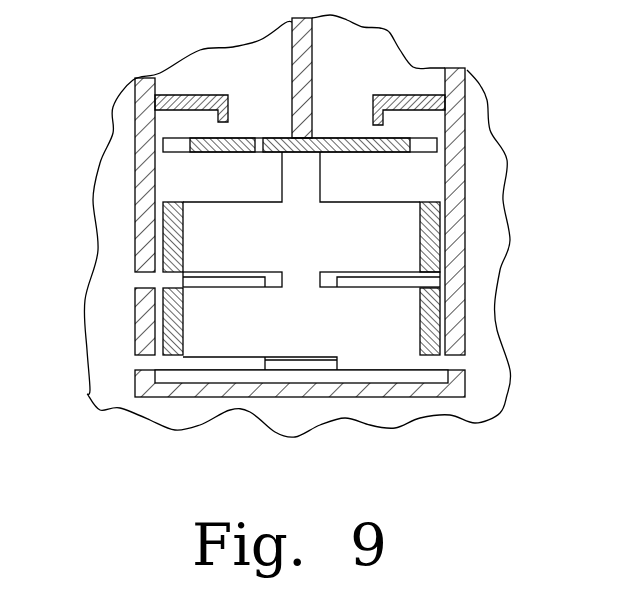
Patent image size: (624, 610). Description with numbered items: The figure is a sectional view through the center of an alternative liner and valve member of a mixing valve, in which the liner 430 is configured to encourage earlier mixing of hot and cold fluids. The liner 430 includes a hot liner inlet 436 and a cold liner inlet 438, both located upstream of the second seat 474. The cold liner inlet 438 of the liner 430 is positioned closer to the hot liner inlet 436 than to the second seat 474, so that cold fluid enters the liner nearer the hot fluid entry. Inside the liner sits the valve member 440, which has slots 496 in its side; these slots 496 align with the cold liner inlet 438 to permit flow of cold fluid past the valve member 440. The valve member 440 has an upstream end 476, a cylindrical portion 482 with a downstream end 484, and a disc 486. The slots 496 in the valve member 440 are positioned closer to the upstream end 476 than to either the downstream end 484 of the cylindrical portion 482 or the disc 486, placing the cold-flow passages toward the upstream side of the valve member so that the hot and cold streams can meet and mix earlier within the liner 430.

The liner 430 is at (458, 212).
The hot liner inlet 436 is at (378, 360).
The cold liner inlet 438 is at (428, 282).
The valve member 440 is at (433, 237).
The second seat 474 is at (422, 112).
The upstream end 476 is at (157, 340).
The cylindrical portion 482 is at (170, 252).
The downstream end 484 is at (438, 198).
The disc 486 is at (235, 152).
The slots 496 is at (276, 274).